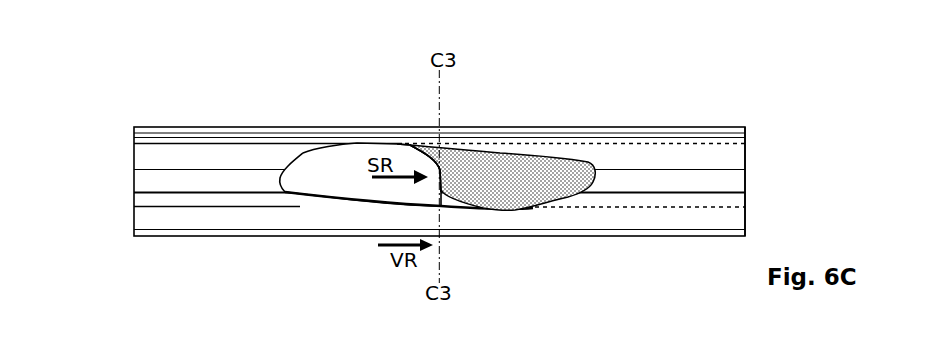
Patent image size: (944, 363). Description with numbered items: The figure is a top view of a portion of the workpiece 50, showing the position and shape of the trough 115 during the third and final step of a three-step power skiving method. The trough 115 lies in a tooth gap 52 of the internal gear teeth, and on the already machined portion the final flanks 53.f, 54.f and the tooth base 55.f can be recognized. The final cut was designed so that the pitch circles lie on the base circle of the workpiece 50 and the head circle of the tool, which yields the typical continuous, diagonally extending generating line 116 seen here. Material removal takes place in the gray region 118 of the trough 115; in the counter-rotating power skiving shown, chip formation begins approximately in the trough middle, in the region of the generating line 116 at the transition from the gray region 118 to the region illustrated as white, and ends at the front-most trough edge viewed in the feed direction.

The workpiece 50 is at (135, 125).
The final flank 54.f is at (157, 161).
The tooth base 55.f is at (158, 178).
The final flank 53.f is at (145, 198).
The trough 115 is at (329, 159).
The generating line 116 is at (423, 157).
The gray region 118 is at (503, 175).
The tooth gap 52 is at (764, 200).